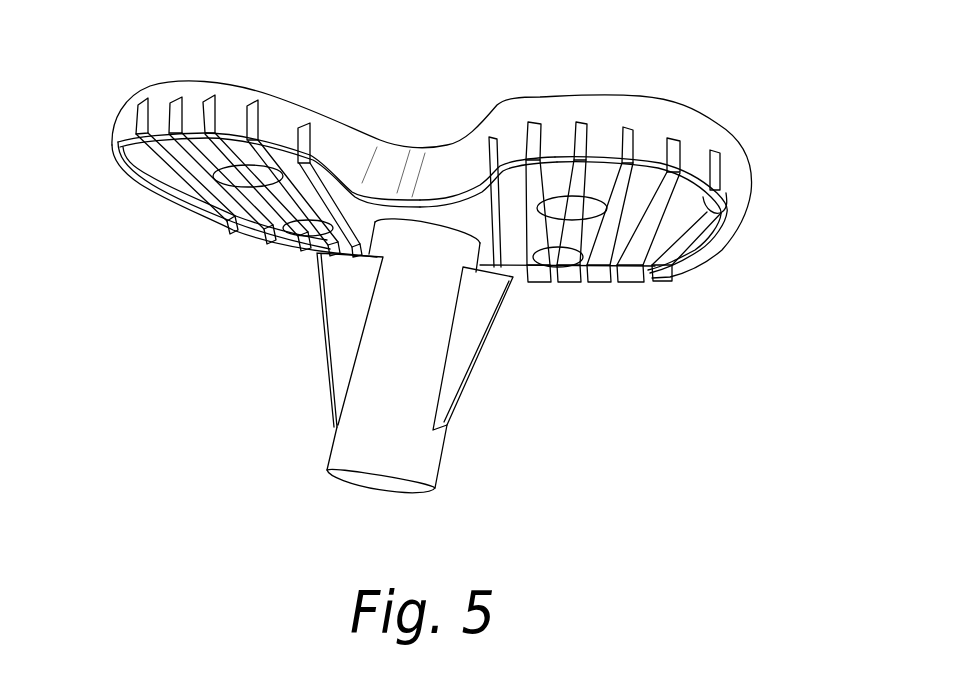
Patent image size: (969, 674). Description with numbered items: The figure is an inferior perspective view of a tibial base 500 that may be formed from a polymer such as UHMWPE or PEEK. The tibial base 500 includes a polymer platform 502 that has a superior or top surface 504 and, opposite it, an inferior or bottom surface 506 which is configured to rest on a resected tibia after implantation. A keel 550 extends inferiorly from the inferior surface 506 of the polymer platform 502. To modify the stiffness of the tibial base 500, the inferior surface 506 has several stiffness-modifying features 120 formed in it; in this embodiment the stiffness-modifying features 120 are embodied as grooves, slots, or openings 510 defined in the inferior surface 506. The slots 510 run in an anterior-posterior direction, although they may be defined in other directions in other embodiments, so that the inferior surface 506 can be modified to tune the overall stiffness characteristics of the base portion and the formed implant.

The tibial base 500 is at (264, 308).
The polymer platform 502 is at (700, 138).
The superior surface 504 is at (199, 78).
The inferior surface 506 is at (333, 193).
The slots 510 is at (209, 107).
The stiffness-modifying features 120 is at (618, 111).
The keel 550 is at (433, 460).